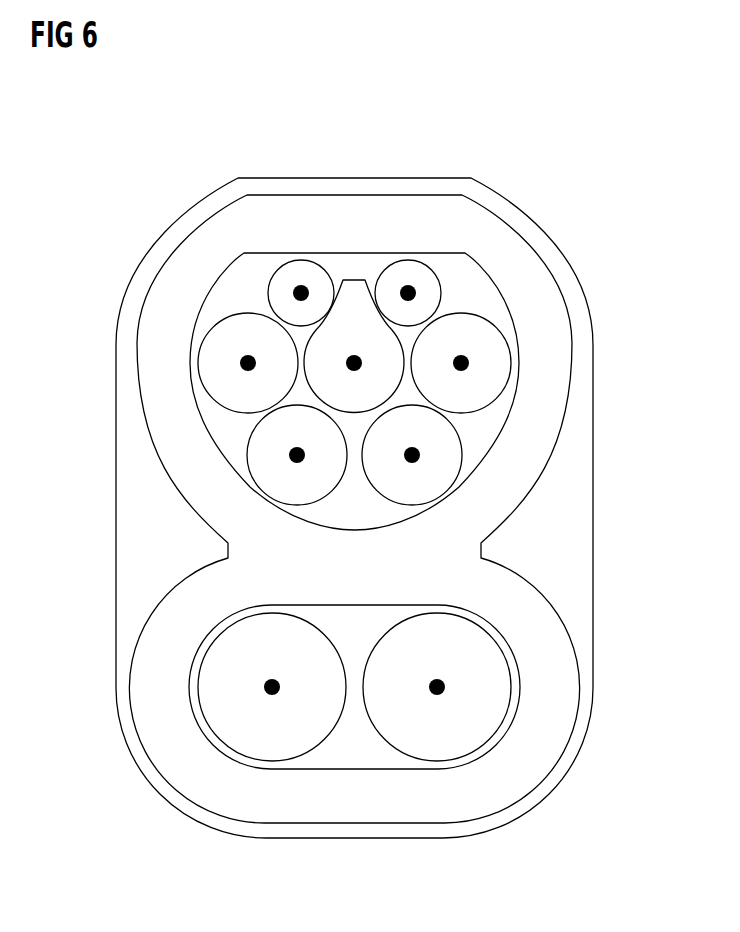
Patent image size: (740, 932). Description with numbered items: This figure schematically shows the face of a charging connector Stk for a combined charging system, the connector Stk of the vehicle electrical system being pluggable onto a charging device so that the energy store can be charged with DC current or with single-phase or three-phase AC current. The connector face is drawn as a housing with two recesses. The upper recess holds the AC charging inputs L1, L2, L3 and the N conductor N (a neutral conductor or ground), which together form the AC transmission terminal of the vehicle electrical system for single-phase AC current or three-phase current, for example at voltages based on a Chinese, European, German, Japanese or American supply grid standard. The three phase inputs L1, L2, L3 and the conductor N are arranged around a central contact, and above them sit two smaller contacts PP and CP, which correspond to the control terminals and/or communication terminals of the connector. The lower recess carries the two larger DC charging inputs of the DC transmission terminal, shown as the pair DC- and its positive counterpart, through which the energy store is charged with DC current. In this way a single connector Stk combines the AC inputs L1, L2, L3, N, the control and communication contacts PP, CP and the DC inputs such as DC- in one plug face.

The connector Stk is at (427, 178).
The control/communication terminal PP is at (283, 291).
The control/communication terminal CP is at (427, 290).
The protective earth contact PE is at (358, 310).
The charging input L1 is at (223, 347).
The charging input L2 is at (282, 436).
The charging input L3 is at (427, 436).
The N conductor N is at (487, 347).
The charging input DC- is at (223, 672).